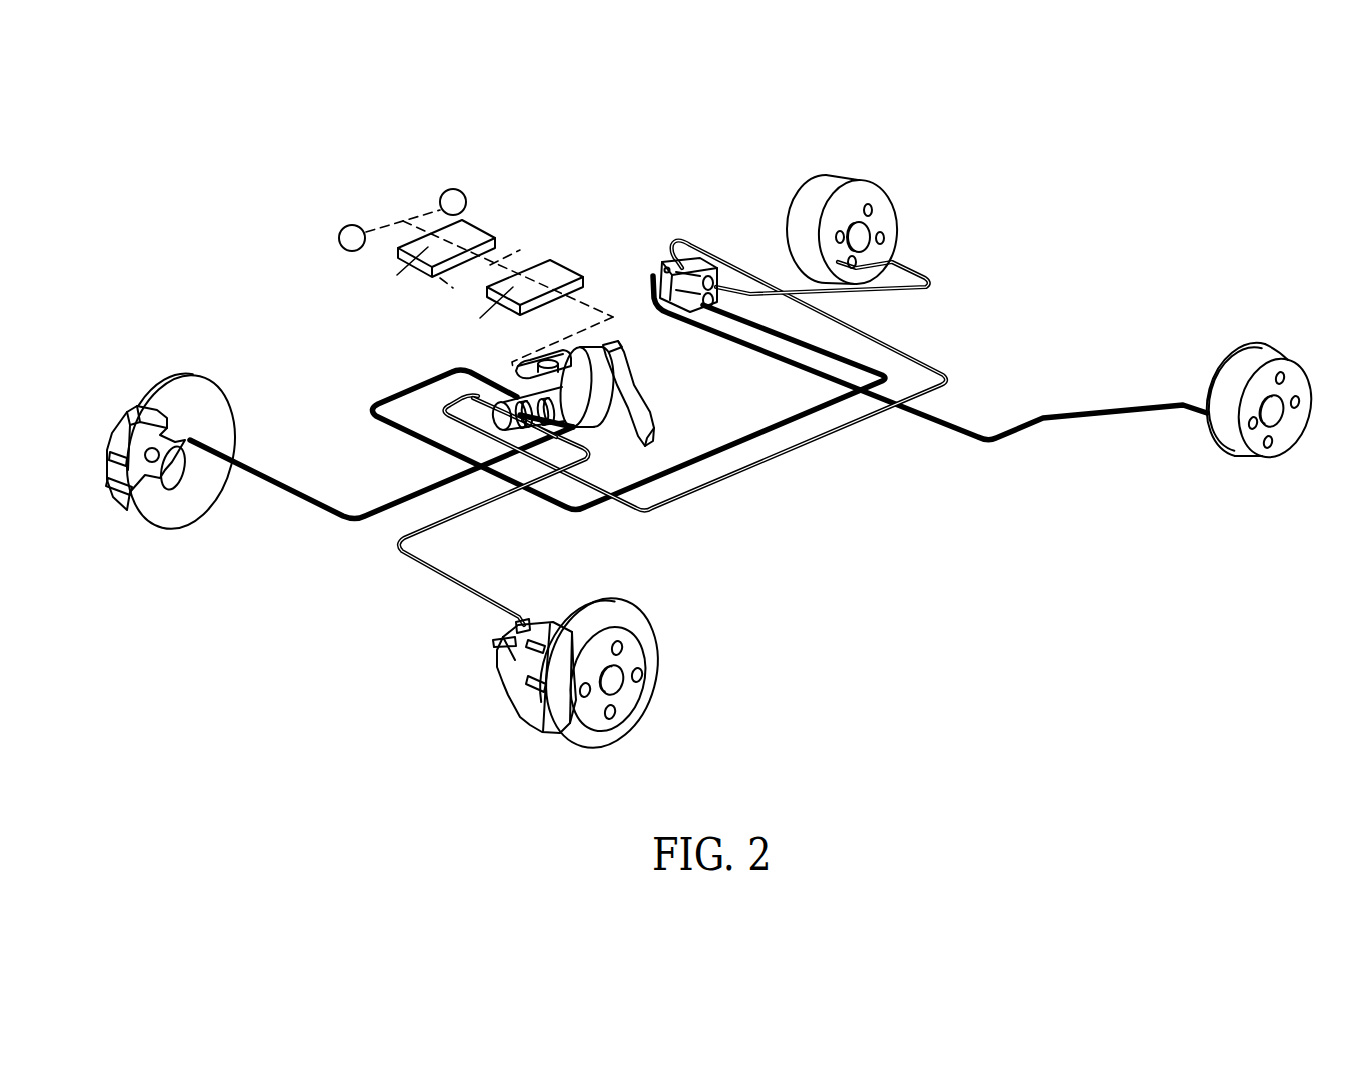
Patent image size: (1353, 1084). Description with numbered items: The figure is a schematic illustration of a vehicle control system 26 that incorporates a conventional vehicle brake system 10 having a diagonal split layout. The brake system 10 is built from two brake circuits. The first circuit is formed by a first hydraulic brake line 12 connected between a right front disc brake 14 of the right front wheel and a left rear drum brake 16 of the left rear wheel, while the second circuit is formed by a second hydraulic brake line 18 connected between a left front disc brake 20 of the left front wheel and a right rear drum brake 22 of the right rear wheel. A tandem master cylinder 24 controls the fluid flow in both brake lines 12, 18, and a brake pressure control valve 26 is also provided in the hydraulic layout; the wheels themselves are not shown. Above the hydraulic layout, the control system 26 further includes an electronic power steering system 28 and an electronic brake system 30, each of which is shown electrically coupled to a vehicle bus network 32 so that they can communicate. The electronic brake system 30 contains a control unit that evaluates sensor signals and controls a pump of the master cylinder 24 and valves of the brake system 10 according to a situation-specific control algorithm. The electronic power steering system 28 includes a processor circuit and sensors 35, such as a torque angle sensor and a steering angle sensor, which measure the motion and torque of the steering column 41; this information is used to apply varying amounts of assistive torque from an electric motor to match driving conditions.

The vehicle brake system 10 is at (793, 478).
The first hydraulic brake line 12 is at (317, 493).
The right front disc brake 14 is at (172, 515).
The left rear drum brake 16 is at (1262, 340).
The second hydraulic brake line 18 is at (910, 352).
The left front disc brake 20 is at (577, 735).
The right rear drum brake 22 is at (874, 185).
The tandem master cylinder 24 is at (505, 398).
The vehicle control system 26 is at (662, 266).
The electronic power steering system (EPS) 28 is at (490, 227).
The electronic brake system (EBS) 30 is at (562, 262).
The vehicle bus network 32 is at (513, 250).
The sensors 35 is at (443, 192).
The steering column 41 is at (342, 229).